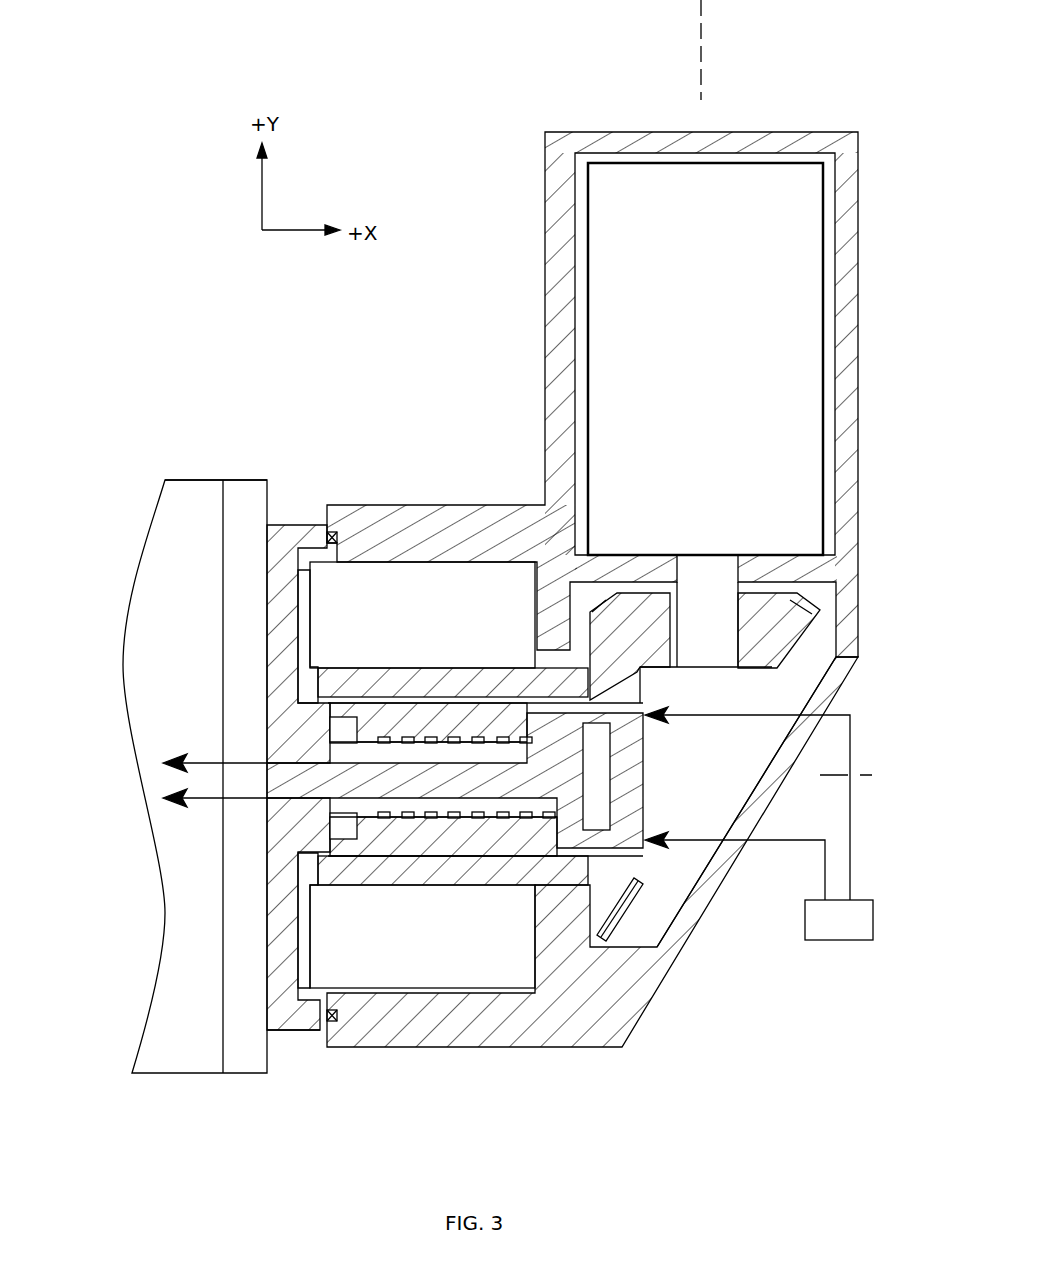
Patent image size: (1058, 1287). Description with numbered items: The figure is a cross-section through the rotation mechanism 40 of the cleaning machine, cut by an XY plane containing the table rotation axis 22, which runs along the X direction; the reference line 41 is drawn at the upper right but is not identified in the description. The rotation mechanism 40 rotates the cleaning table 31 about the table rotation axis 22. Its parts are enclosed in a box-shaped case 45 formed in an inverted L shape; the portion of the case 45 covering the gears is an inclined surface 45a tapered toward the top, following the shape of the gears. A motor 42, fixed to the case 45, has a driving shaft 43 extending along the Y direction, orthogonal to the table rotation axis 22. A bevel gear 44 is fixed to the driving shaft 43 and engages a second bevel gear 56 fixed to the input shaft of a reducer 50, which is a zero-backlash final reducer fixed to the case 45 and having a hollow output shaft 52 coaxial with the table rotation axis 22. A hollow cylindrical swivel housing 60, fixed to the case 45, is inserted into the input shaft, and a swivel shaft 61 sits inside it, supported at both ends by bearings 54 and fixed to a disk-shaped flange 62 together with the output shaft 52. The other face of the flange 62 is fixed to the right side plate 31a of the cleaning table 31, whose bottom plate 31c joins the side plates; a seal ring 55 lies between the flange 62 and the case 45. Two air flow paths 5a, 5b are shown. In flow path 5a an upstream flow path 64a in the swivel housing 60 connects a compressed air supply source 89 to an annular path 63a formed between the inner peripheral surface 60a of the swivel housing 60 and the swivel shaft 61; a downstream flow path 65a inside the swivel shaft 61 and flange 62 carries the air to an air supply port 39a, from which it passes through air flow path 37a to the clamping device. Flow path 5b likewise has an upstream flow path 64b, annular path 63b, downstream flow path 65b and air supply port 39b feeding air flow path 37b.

The rotation axis 41 is at (701, 47).
The rotation mechanism 40 is at (885, 150).
The case 45 is at (859, 285).
The inclined surface 45a is at (700, 923).
The motor 42 is at (789, 420).
The driving shaft 43 is at (715, 572).
The bevel gear 44 is at (768, 636).
The reducer 50 is at (322, 573).
The output shaft 52 is at (303, 1030).
The flange 62 is at (283, 1032).
The seal ring 55 is at (332, 532).
The bearings 54 is at (572, 660).
The cleaning table 31 is at (173, 1075).
The right side plate 31a is at (241, 1075).
The bottom plate 31c is at (172, 508).
The air flow path 5b is at (58, 578).
The annular path 63b is at (350, 755).
The downstream flow path 65b is at (305, 762).
The air supply port 39b is at (290, 733).
The air flow path 5a is at (60, 855).
The annular path 63a is at (425, 898).
The downstream flow path 65a is at (310, 805).
The air supply port 39a is at (300, 797).
The air flow path 37b is at (200, 763).
The air flow path 37a is at (200, 798).
The swivel housing 60 is at (600, 752).
The inner peripheral surface 60a is at (365, 740).
The swivel shaft 61 is at (603, 790).
The upstream flow path 64b is at (677, 713).
The upstream flow path 64a is at (783, 843).
The compressed air supply source 89 is at (850, 925).
The bevel gear 56 is at (660, 930).
The table rotation axis 22 is at (882, 777).